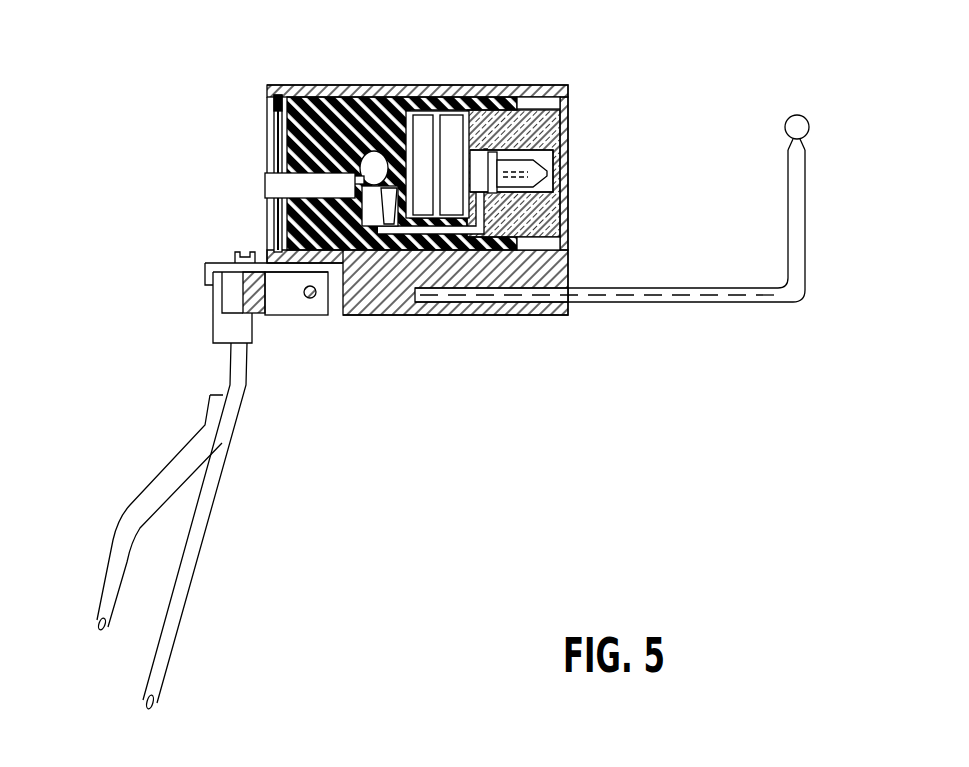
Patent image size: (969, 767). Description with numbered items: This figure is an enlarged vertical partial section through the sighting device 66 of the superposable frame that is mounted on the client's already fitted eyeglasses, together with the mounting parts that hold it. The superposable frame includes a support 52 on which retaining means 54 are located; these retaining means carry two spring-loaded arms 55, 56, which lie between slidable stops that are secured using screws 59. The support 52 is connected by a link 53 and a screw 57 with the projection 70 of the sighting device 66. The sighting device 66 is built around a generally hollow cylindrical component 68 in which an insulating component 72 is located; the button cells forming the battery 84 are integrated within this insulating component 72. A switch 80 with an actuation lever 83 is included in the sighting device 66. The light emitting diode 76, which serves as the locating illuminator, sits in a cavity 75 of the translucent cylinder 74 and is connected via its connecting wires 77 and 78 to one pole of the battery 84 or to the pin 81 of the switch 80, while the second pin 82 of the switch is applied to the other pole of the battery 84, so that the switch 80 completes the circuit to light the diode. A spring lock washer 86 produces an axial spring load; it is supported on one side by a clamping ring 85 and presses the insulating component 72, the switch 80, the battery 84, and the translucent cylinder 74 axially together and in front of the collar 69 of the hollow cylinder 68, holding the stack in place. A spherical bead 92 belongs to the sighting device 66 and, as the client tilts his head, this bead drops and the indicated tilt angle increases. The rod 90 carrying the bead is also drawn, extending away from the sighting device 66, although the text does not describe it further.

The support 52 is at (257, 307).
The link 53 is at (285, 298).
The retaining means 54 is at (203, 340).
The spring-loaded arm 55 is at (193, 582).
The spring-loaded arm 56 is at (120, 547).
The screw 57 is at (312, 297).
The screw 59 is at (235, 253).
The sighting device 66 is at (265, 127).
The hollow cylindrical component 68 is at (535, 92).
The collar 69 is at (570, 110).
The projection 70 is at (500, 313).
The insulating component 72 is at (318, 105).
The translucent cylinder 74 is at (540, 130).
The cavity 75 is at (560, 188).
The light emitting diode 76 is at (548, 170).
The connecting wire 77 is at (475, 100).
The connecting wire 78 is at (362, 233).
The switch 80 is at (320, 183).
The pin 81 is at (395, 232).
The second pin 82 is at (375, 135).
The actuation lever 83 is at (277, 188).
The battery 84 is at (447, 130).
The clamping ring 85 is at (270, 107).
The spring lock washer 86 is at (283, 97).
The lever rod 90 is at (698, 297).
The spherical bead 92 is at (810, 125).